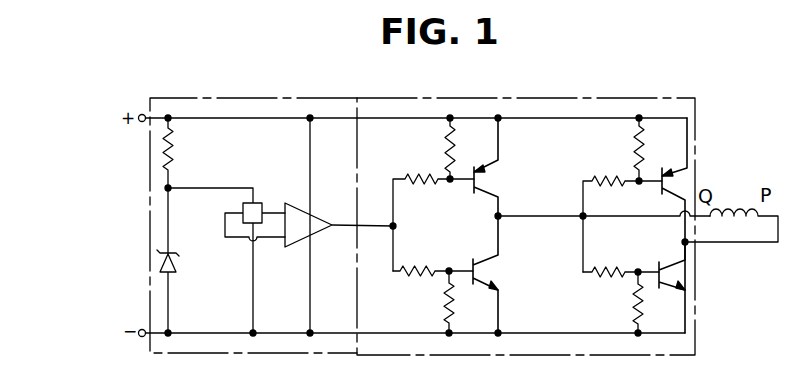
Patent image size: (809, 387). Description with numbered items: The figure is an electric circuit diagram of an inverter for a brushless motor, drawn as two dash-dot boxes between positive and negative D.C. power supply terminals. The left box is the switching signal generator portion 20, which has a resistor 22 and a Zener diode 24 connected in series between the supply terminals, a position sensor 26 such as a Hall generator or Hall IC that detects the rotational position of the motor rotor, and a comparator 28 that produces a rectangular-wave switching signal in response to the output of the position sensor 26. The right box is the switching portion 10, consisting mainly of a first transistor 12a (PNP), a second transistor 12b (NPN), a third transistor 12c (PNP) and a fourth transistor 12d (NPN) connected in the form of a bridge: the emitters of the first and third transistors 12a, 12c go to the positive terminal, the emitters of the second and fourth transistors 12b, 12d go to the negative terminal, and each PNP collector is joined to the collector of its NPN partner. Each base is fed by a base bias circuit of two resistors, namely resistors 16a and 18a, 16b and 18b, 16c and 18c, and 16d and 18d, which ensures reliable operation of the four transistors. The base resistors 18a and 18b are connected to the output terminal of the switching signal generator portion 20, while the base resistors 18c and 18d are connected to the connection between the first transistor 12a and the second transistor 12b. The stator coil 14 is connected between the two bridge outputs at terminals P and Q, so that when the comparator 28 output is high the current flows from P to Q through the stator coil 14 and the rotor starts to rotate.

The switching portion 10 is at (557, 98).
The switching signal generator portion 20 is at (262, 97).
The resistor 22 is at (175, 152).
The Zener diode 24 is at (181, 257).
The position sensor 26 is at (250, 208).
The comparator 28 is at (313, 231).
The first transistor 12a is at (490, 179).
The second transistor 12b is at (488, 269).
The third transistor 12c is at (681, 185).
The fourth transistor 12d is at (677, 272).
The resistor 16a is at (445, 150).
The resistor 16b is at (444, 304).
The resistor 16c is at (634, 151).
The resistor 16d is at (633, 306).
The base resistor 18a is at (421, 184).
The base resistor 18b is at (419, 266).
The base resistor 18c is at (613, 187).
The base resistor 18d is at (608, 266).
The stator coil 14 is at (742, 203).